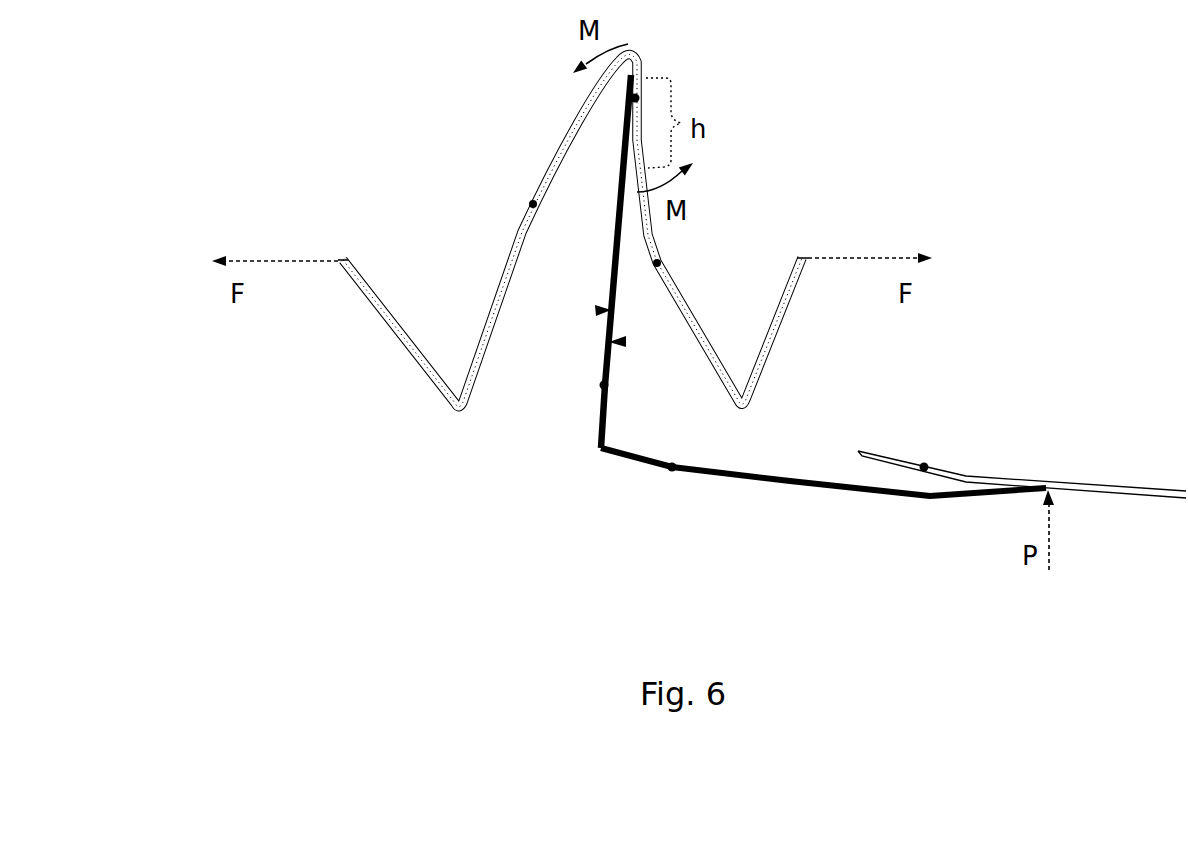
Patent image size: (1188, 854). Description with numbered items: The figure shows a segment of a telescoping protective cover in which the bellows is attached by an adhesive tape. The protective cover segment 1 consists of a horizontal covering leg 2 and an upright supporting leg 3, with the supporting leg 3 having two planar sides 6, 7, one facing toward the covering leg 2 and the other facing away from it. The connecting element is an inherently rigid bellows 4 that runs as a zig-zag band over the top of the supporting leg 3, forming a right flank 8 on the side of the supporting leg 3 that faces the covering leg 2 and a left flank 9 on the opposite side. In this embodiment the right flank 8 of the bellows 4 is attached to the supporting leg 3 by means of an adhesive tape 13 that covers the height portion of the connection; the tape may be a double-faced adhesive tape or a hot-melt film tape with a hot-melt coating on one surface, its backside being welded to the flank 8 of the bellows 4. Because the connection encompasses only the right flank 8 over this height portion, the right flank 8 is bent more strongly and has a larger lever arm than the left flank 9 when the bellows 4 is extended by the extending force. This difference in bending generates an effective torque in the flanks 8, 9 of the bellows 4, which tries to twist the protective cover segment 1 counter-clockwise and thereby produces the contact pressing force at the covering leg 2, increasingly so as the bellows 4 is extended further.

The protective cover segment 1 is at (650, 552).
The covering leg 2 is at (672, 465).
The supporting leg 3 is at (602, 385).
The bellows 4 is at (403, 383).
The planar side 6 is at (626, 341).
The planar side 7 is at (596, 310).
The right flank 8 is at (659, 262).
The left flank 9 is at (531, 204).
The adhesive tape 13 is at (637, 98).